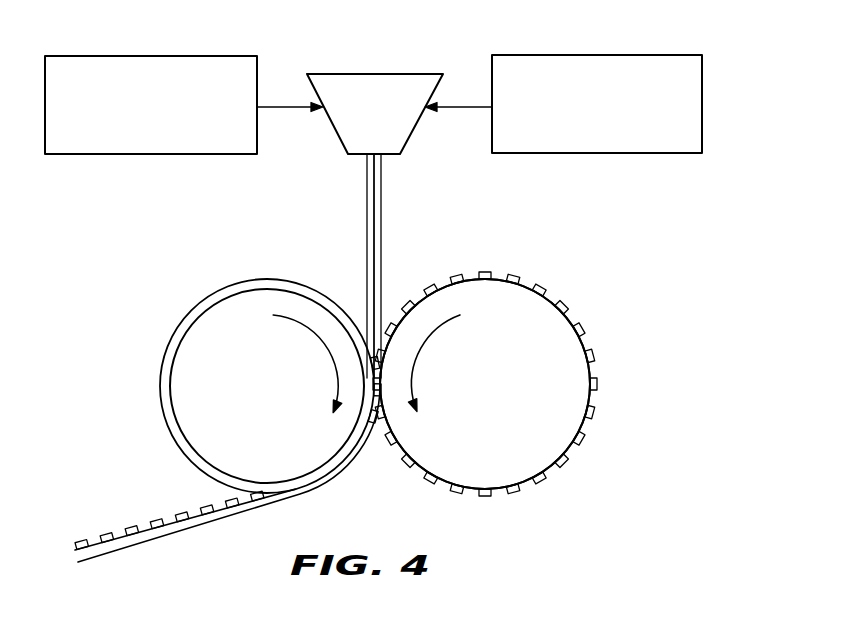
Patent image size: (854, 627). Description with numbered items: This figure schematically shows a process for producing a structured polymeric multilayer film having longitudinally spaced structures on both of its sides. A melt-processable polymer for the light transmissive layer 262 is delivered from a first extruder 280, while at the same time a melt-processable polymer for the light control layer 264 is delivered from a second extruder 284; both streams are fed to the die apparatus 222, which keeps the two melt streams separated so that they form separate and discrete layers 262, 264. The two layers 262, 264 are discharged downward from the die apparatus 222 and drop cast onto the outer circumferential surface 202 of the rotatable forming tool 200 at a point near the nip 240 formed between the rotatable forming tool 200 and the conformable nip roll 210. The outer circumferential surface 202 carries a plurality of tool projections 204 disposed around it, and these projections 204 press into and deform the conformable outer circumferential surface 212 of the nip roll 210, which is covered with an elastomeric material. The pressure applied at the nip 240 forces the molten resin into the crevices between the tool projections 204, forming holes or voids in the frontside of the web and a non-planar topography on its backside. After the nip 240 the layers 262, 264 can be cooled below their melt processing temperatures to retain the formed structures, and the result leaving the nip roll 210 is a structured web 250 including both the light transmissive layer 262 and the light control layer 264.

The rotatable forming tool 200 is at (614, 296).
The outer circumferential surface 202 is at (500, 281).
The tool projections 204 is at (538, 287).
The conformable nip roll 210 is at (209, 264).
The conformable outer circumferential surface 212 is at (331, 300).
The slot die apparatus 222 is at (372, 74).
The nip 240 is at (392, 298).
The structured web 250 is at (322, 483).
The light transmissive layer 262 is at (365, 185).
The light control layer 264 is at (383, 185).
The first extruder 280 is at (137, 56).
The second extruder 284 is at (595, 55).